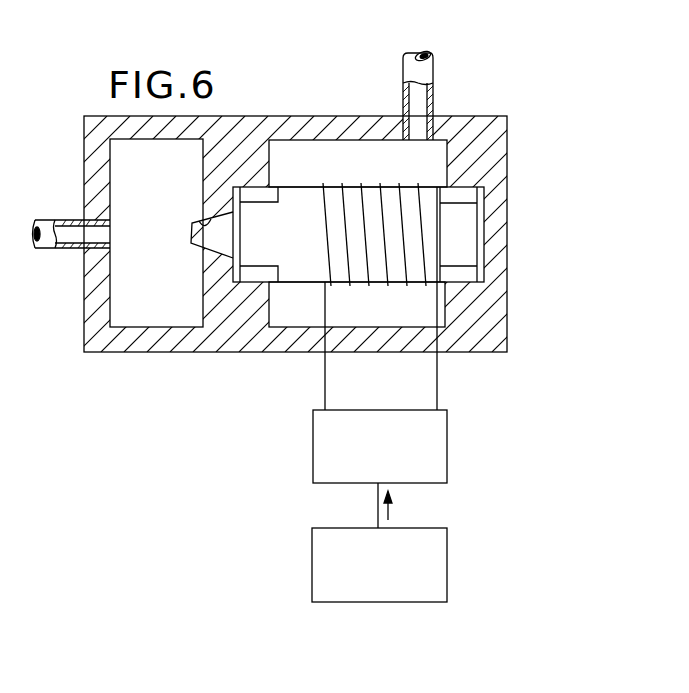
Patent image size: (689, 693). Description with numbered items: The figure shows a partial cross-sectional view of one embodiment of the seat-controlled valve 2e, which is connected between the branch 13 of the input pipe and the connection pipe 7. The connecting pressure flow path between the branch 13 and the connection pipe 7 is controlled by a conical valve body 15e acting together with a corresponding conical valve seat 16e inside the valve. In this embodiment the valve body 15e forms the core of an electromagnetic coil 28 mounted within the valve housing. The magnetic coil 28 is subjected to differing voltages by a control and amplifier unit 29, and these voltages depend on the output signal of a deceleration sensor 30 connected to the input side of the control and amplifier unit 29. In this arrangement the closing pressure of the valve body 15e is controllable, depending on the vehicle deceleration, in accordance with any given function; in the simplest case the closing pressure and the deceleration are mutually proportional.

The seat-controlled valve 2e is at (512, 157).
The branch 13 is at (46, 223).
The valve body 15e is at (198, 237).
The valve seat 16e is at (202, 222).
The electromagnetic coil 28 is at (363, 207).
The connection pipe 7 is at (425, 72).
The control and amplifier unit 29 is at (322, 447).
The deceleration sensor 30 is at (320, 571).